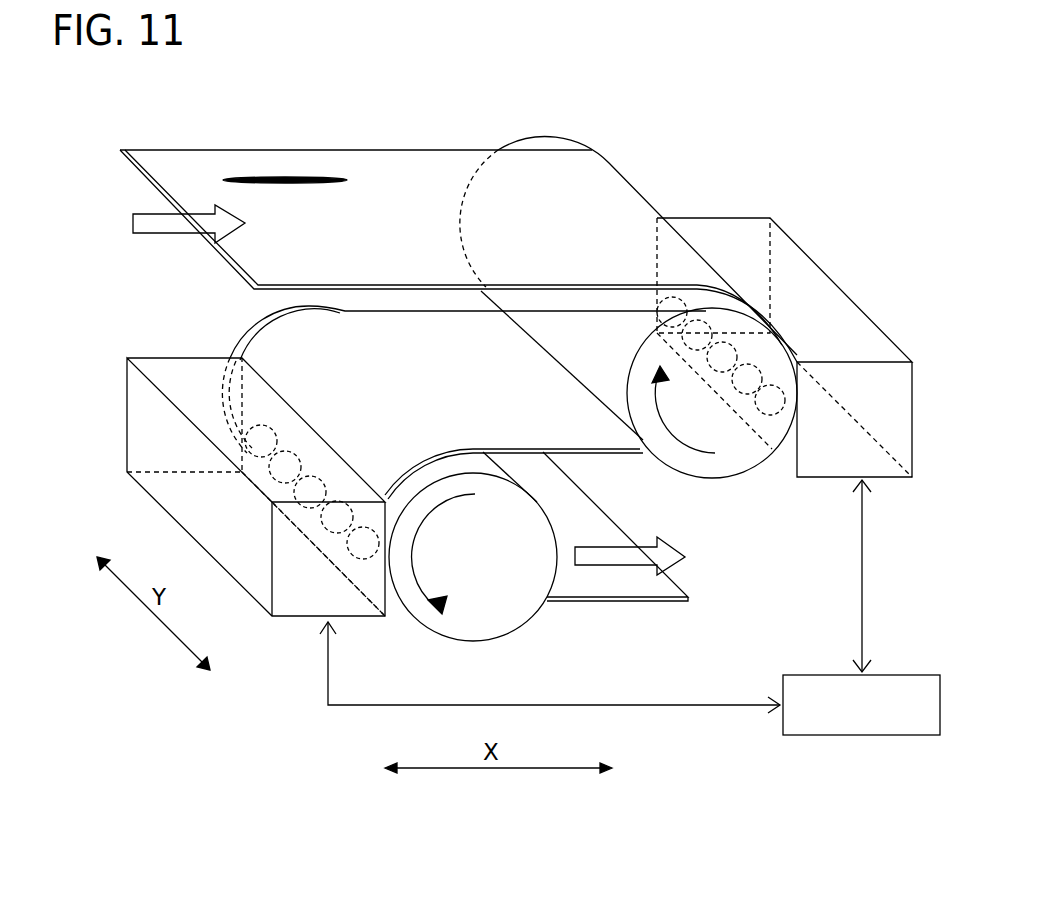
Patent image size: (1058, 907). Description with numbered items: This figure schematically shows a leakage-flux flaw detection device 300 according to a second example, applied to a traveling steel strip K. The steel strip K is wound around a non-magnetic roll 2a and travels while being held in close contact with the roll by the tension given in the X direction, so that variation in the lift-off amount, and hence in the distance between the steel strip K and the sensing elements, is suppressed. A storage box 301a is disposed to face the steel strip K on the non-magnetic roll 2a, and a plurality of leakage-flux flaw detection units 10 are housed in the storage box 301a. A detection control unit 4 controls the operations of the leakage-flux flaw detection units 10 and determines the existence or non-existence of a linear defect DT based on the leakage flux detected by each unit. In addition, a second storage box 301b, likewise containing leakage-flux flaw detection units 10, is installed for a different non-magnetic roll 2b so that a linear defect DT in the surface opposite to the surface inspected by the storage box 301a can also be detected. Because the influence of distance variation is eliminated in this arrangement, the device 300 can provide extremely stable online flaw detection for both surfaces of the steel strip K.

The steel strip K is at (378, 180).
The linear defect DT is at (273, 178).
The leakage-flux flaw detection device 300 is at (705, 185).
The storage box 301a is at (162, 450).
The storage box 301b is at (832, 300).
The non-magnetic roll 2a is at (485, 585).
The non-magnetic roll 2b is at (718, 463).
The leakage-flux flaw detection unit 10 is at (375, 565).
The detection control unit 4 is at (862, 735).